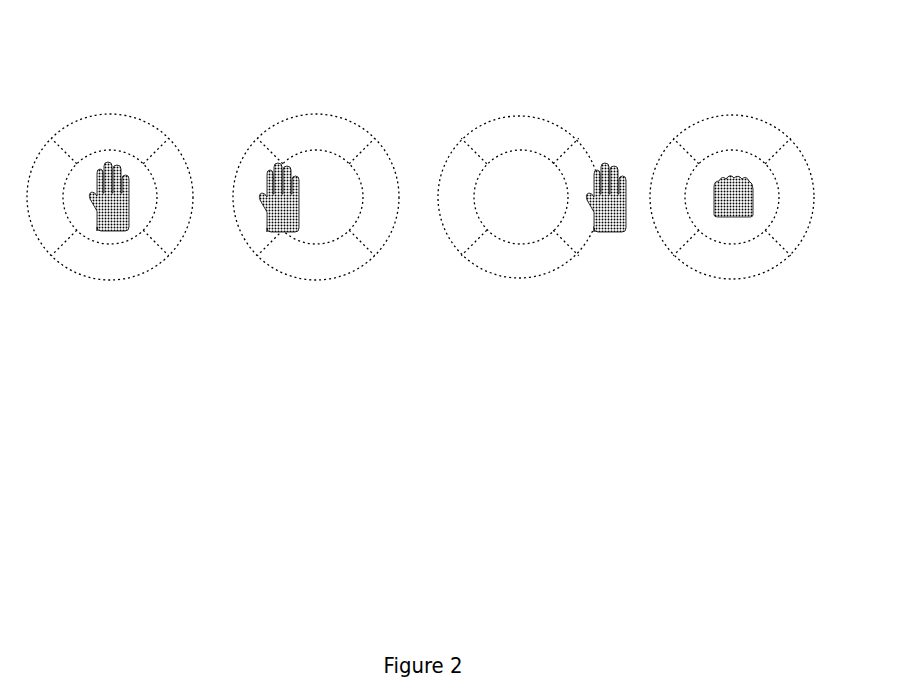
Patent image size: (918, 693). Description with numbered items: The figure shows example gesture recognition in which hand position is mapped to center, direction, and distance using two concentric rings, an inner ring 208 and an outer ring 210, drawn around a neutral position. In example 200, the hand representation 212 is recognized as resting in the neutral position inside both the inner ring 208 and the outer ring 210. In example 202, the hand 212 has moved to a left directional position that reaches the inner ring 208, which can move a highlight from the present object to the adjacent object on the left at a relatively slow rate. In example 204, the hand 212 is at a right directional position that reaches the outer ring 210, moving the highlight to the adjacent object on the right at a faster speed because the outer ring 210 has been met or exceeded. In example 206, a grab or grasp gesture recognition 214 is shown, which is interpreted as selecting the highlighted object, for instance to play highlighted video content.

The example 200 is at (144, 90).
The example 202 is at (357, 90).
The example 204 is at (550, 90).
The example 206 is at (766, 90).
The inner ring 208 is at (130, 236).
The outer ring 210 is at (63, 263).
The hand representation 212 is at (293, 216).
The grab or grasp gesture recognition 214 is at (737, 204).